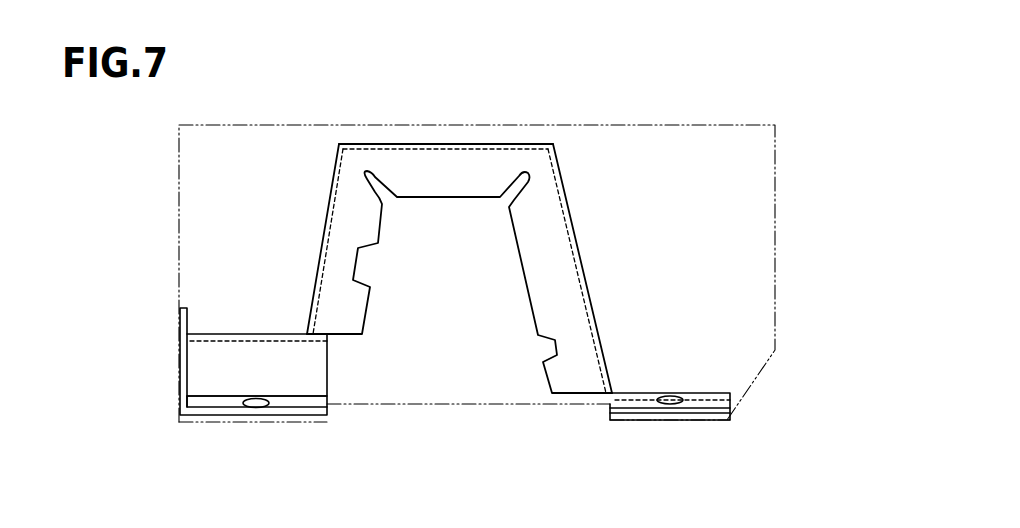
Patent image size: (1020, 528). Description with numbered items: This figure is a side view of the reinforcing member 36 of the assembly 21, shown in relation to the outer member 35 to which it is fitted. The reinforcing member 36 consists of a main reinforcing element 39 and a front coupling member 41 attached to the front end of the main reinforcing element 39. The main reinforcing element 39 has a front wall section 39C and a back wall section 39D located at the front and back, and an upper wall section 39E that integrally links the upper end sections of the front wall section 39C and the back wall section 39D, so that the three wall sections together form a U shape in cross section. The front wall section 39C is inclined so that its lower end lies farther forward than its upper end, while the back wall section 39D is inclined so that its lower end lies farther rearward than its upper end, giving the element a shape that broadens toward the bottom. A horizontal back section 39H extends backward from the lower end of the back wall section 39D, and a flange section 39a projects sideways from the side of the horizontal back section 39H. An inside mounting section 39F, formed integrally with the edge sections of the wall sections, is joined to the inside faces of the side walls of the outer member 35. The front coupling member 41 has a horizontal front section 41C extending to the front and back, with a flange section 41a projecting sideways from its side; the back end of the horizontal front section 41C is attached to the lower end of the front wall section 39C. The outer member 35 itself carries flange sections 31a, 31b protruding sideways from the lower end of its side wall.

The device assembly 21 is at (152, 255).
The outer member 35 is at (734, 125).
The reinforcing member 36 is at (328, 206).
The main reinforcing element 39 is at (566, 192).
The front wall section 39C is at (334, 173).
The upper wall section 39E is at (463, 144).
The back wall section 39D is at (575, 237).
The inside mounting section 39F is at (542, 293).
The horizontal back section 39H is at (652, 393).
The flange section 39a is at (710, 408).
The front coupling member 41 is at (178, 363).
The horizontal front section 41C is at (250, 334).
The flange section 41a is at (212, 408).
The flange section 31a is at (247, 425).
The flange section 31b is at (672, 423).